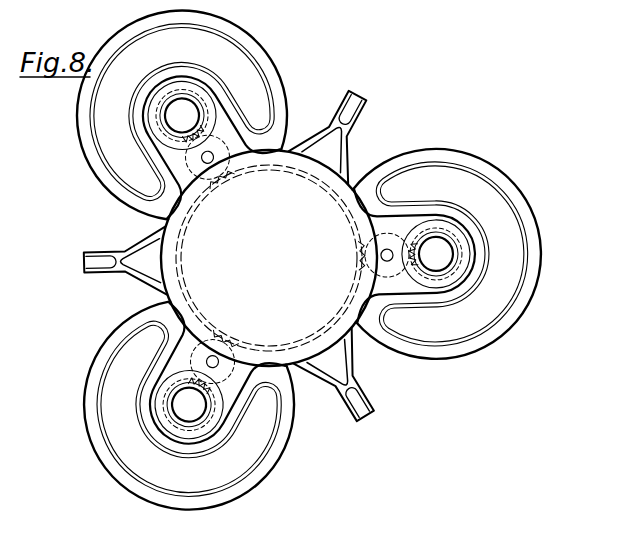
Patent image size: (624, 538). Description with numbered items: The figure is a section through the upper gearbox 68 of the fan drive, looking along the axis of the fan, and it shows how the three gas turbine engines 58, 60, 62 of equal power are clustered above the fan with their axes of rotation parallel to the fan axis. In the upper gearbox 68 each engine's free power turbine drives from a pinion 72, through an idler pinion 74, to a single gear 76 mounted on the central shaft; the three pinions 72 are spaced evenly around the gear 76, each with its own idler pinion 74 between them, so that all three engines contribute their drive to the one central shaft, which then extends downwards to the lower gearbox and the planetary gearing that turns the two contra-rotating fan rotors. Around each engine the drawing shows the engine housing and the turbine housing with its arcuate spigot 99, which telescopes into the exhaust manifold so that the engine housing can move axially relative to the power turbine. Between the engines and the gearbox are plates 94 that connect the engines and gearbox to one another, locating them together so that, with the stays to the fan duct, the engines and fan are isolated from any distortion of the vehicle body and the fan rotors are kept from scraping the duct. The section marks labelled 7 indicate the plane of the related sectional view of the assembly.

The gas turbine engine 58 is at (455, 239).
The gas turbine engine 60 is at (292, 438).
The gas turbine engine 62 is at (300, 69).
The upper gearbox 68 is at (344, 293).
The pinion 72 is at (443, 229).
The idler pinion 74 is at (389, 234).
The gear 76 is at (338, 193).
The plate 94 is at (134, 246).
The arcuate spigot 99 is at (510, 313).
The section line 7- 7 is at (63, 267).